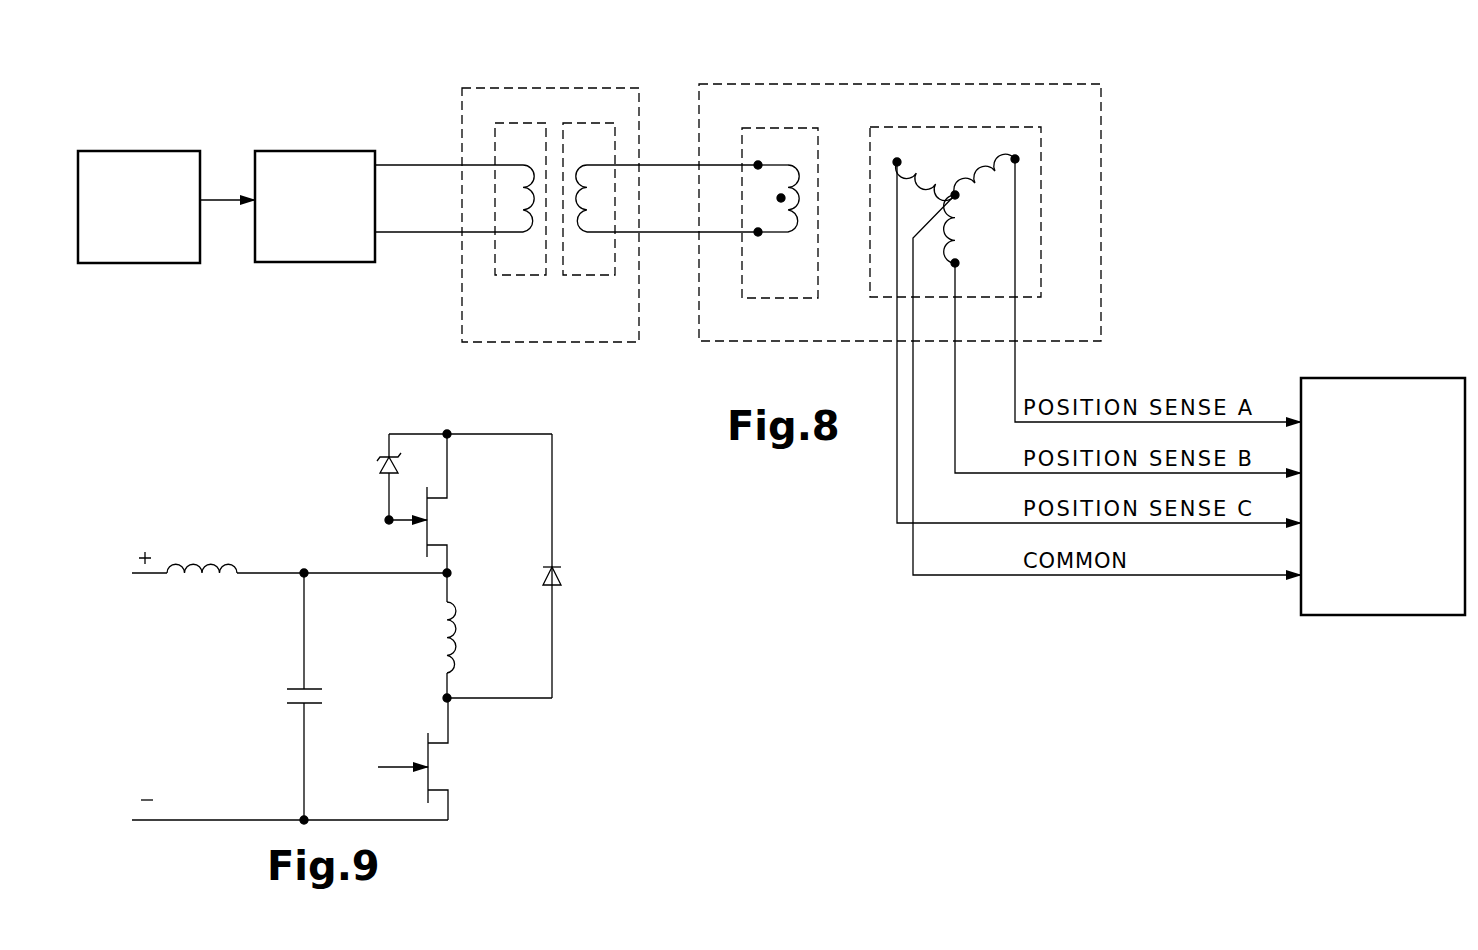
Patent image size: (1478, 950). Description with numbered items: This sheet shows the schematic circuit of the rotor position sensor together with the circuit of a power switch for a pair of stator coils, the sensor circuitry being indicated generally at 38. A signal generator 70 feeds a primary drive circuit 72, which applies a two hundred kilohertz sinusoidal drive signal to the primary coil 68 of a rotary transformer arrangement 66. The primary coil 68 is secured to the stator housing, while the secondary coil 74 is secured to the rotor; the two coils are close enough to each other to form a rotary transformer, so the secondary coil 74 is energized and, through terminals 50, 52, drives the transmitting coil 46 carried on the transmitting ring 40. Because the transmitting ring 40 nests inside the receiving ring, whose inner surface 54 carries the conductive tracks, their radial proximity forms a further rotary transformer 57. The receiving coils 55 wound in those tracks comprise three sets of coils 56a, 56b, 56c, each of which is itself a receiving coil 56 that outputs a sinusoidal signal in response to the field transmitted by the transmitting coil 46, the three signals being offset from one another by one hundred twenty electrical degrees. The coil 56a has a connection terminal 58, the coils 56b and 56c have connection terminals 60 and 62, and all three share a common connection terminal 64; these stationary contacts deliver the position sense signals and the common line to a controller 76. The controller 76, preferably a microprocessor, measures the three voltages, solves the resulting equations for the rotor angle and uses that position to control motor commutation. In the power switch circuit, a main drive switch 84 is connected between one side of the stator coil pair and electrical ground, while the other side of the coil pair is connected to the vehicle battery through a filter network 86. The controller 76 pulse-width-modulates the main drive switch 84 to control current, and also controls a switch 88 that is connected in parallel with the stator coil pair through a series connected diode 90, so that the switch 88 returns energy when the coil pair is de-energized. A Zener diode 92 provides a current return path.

In FIG. 8, the rotor position sensing circuit 38 is at (672, 63).
In FIG. 8, the transmitting ring 40 is at (790, 128).
In FIG. 8, the transmitting coil 46 is at (790, 210).
In FIG. 8, the terminal 50 is at (758, 163).
In FIG. 8, the terminal 52 is at (758, 234).
In FIG. 8, the inner surface 54 is at (779, 197).
In FIG. 8, the receiving coils 55 is at (1032, 297).
In FIG. 8, the receiving coil 56 is at (998, 127).
In FIG. 8, the coil 56a is at (960, 228).
In FIG. 8, the coil 56b is at (982, 182).
In FIG. 8, the coil 56c is at (928, 187).
In FIG. 8, the rotary transformer 57 is at (890, 83).
In FIG. 8, the connection terminal 58 is at (960, 265).
In FIG. 8, the connection terminal 60 is at (1020, 163).
In FIG. 8, the connection terminal 62 is at (897, 162).
In FIG. 8, the common connection terminal 64 is at (960, 193).
In FIG. 8, the rotary transformer arrangement 66 is at (528, 87).
In FIG. 8, the primary coil 68 is at (528, 197).
In FIG. 8, the signal generator 70 is at (134, 164).
In FIG. 8, the primary drive circuit 72 is at (312, 157).
In FIG. 8, the secondary coil 74 is at (587, 197).
In FIG. 8, the controller 76 is at (1348, 402).
In FIG. 9, the main drive switch 84 is at (448, 762).
In FIG. 9, the filter network 86 is at (257, 668).
In FIG. 9, the switch 88 is at (438, 518).
In FIG. 9, the diode 90 is at (563, 580).
In FIG. 9, the Zener diode 92 is at (373, 473).